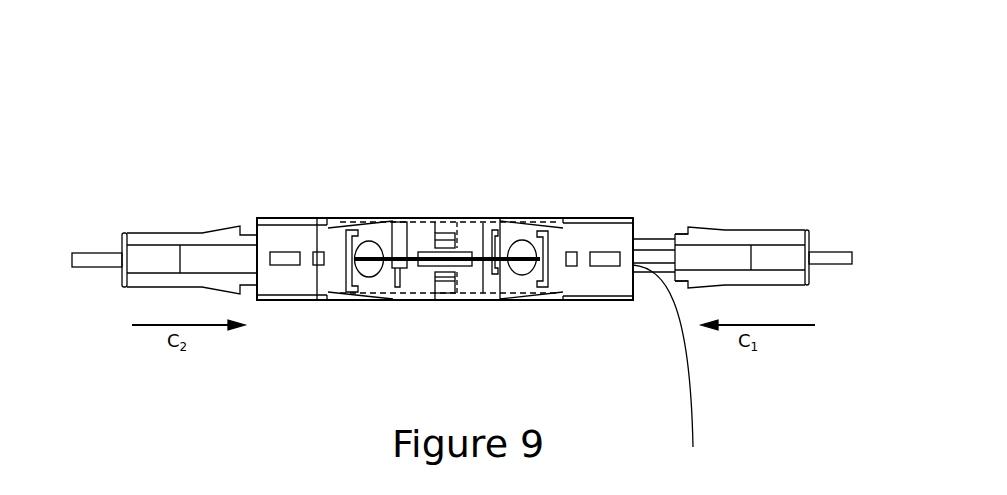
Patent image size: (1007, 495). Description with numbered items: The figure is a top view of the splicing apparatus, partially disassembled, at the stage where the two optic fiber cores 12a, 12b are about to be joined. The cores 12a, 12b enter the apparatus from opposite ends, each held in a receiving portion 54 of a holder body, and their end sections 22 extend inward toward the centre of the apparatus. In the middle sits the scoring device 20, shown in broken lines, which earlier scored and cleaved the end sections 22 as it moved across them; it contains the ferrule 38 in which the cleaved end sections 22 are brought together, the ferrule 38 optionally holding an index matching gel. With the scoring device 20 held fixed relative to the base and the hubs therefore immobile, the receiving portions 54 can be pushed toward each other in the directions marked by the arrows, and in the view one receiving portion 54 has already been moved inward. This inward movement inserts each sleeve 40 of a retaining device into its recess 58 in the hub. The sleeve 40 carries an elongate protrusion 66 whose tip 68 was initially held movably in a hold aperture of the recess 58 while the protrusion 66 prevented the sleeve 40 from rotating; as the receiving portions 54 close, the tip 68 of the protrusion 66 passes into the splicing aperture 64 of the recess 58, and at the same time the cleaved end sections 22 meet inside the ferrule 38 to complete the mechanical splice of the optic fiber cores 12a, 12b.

The optic fiber core 12a is at (815, 258).
The optic fiber core 12b is at (92, 262).
The scoring device 20 is at (386, 240).
The end sections 22 is at (502, 263).
The ferrule 38 is at (442, 265).
The sleeve 40 is at (665, 240).
The receiving portion 54 is at (193, 208).
The recess 58 is at (671, 367).
The splicing aperture 64 is at (317, 218).
The elongate protrusion 66 is at (641, 258).
The tip 68 is at (317, 300).